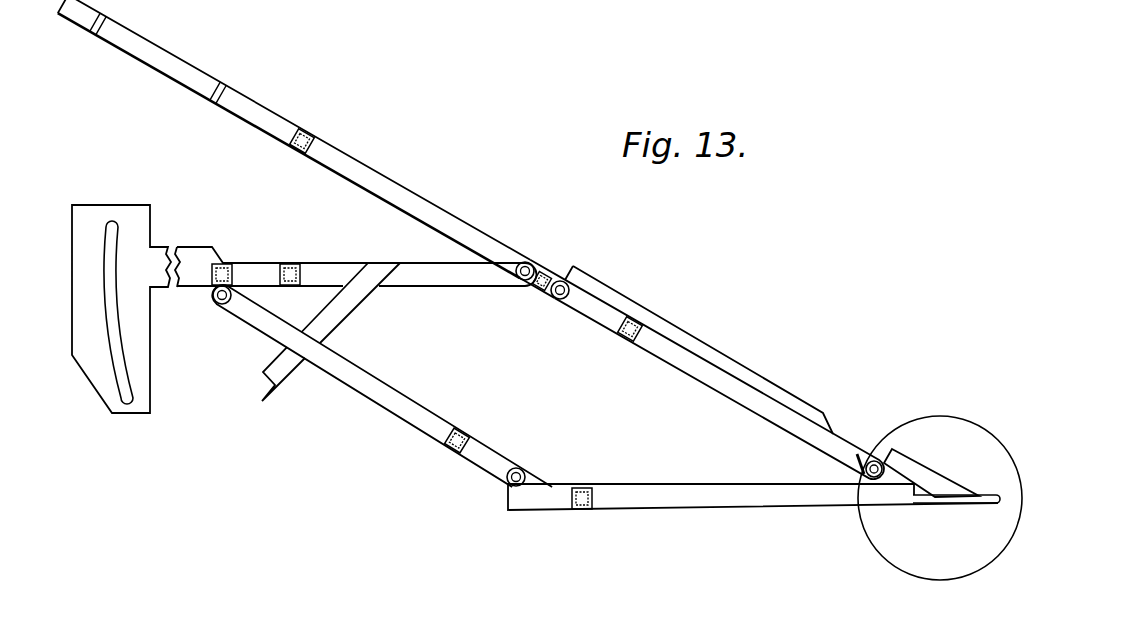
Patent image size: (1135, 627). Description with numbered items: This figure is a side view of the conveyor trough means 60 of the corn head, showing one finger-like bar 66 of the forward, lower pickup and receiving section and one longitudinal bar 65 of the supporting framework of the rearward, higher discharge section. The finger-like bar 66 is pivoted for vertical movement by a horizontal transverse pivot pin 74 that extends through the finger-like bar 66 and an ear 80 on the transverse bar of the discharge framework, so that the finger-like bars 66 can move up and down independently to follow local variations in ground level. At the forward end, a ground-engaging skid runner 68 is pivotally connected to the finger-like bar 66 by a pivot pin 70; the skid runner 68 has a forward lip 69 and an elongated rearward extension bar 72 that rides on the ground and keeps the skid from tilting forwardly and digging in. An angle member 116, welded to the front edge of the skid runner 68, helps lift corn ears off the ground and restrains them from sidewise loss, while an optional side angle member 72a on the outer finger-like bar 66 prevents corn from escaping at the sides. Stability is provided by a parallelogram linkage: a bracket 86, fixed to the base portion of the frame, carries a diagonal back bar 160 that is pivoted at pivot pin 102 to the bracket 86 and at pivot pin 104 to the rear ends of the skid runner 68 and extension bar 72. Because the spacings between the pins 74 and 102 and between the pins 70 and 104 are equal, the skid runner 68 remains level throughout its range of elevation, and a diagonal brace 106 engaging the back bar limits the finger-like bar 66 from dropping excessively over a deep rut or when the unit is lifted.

The bracket 86 is at (116, 210).
The longitudinal bar 65 is at (331, 152).
The ear 80 is at (331, 264).
The pivot pin 74 is at (527, 262).
The conveyor trough means 60 is at (568, 254).
The finger-like bar 66 is at (749, 402).
The side angle member 72a is at (745, 367).
The pivot pin 70 is at (868, 503).
The angle member 116 is at (908, 462).
The skid runner 68 is at (967, 506).
The forward lip 69 is at (990, 494).
The rearward extension bar 72 is at (718, 500).
The diagonal strut 160 is at (418, 405).
The pivot pin 104 is at (522, 470).
The pivot pin 102 is at (221, 305).
The diagonal brace 106 is at (335, 319).